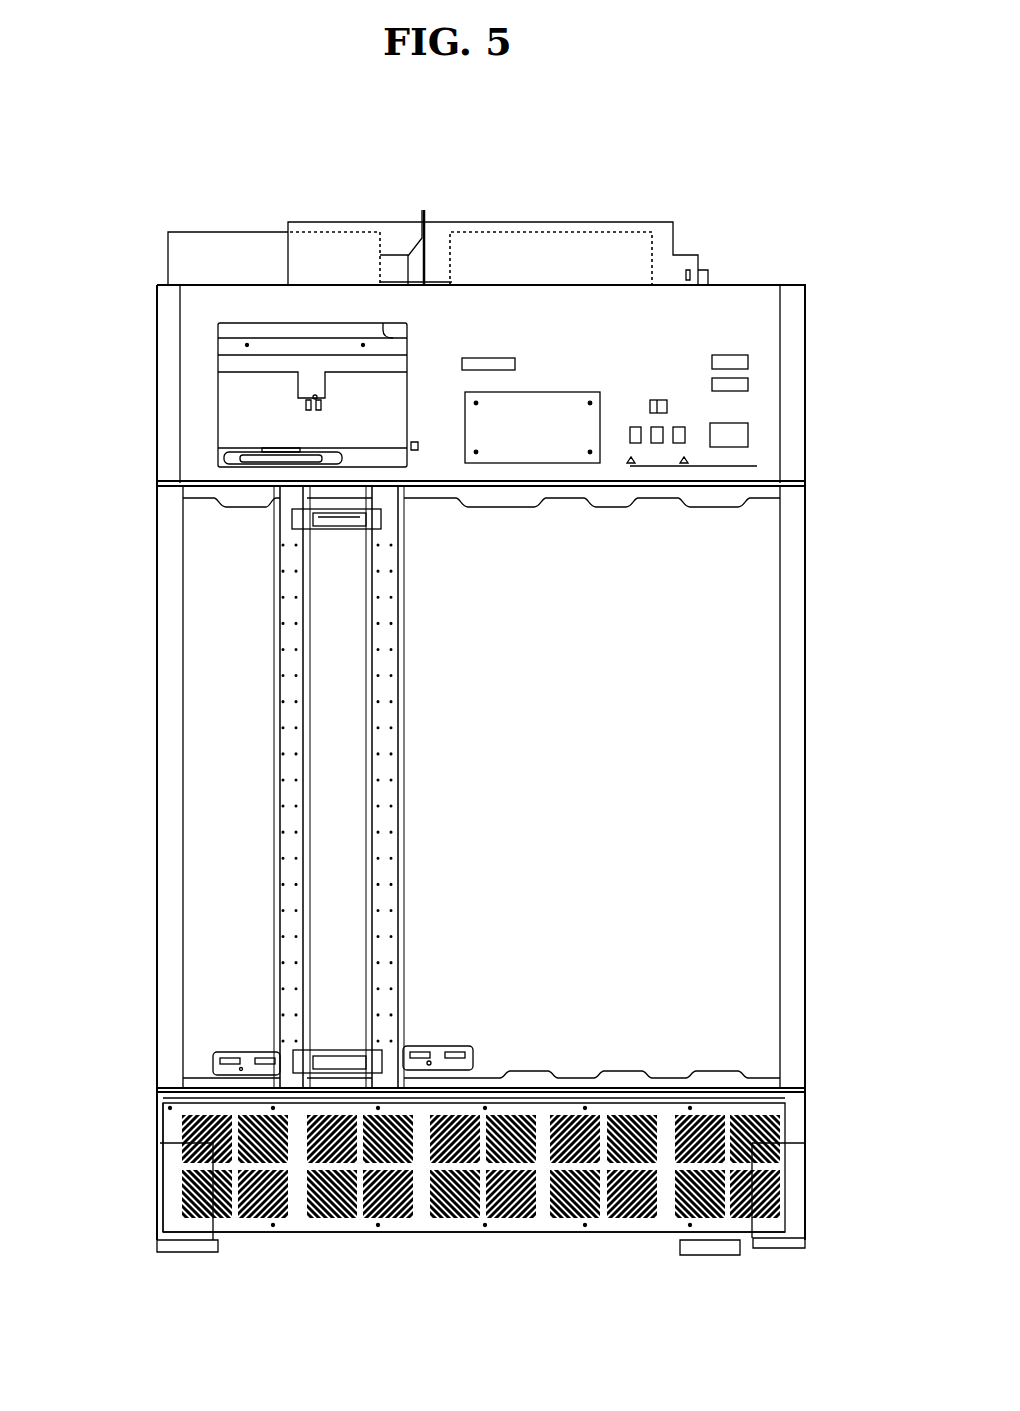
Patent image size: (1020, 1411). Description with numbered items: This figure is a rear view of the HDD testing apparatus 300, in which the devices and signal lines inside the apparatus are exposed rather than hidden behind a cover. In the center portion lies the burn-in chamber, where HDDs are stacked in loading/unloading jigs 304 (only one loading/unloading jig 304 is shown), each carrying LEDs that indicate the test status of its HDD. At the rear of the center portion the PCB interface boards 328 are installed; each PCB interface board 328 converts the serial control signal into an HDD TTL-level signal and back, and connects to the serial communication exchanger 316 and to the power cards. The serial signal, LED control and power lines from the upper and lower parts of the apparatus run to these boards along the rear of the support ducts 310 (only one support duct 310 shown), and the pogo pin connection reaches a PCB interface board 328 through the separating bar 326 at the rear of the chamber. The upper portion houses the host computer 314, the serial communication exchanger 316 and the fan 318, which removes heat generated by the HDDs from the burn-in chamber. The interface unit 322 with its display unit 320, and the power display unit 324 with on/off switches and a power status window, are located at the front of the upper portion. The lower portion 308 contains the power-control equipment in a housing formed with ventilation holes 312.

The HDD testing apparatus 300 is at (170, 1321).
The loading/unloading jig 304 is at (332, 1067).
The lower portion 308 is at (663, 1207).
The support duct 310 is at (392, 816).
The ventilation holes 312 is at (570, 1207).
The host computer 314 is at (246, 245).
The serial communication exchanger 316 is at (508, 244).
The fan 318 is at (616, 223).
The display unit 320 is at (232, 405).
The interface unit 322 is at (533, 450).
The power display unit 324 is at (713, 466).
The separating bar 326 is at (430, 1065).
The PCB interface board 328 is at (443, 1043).